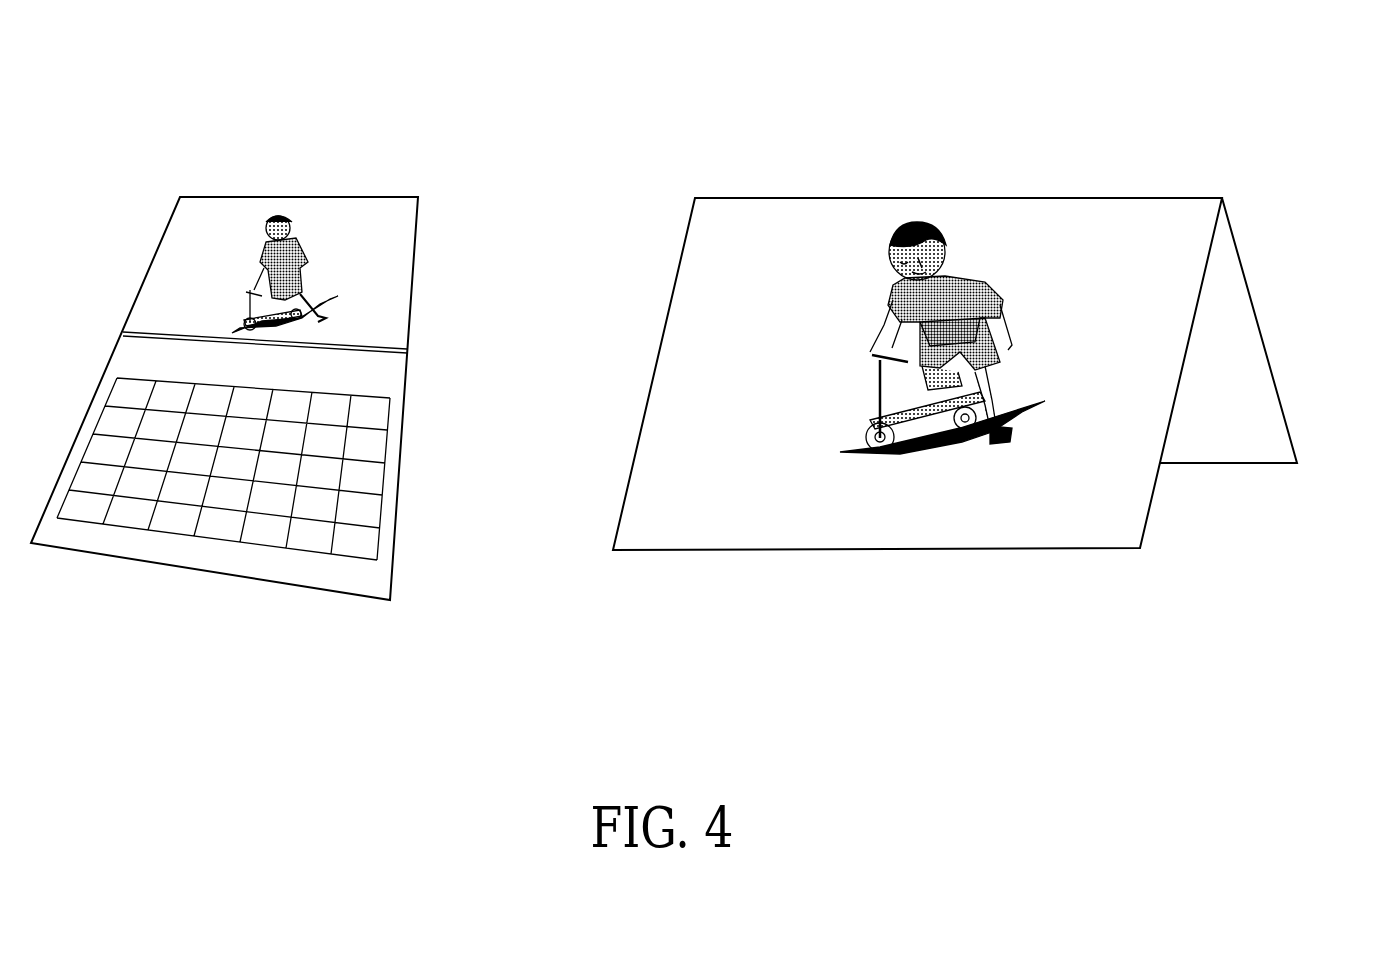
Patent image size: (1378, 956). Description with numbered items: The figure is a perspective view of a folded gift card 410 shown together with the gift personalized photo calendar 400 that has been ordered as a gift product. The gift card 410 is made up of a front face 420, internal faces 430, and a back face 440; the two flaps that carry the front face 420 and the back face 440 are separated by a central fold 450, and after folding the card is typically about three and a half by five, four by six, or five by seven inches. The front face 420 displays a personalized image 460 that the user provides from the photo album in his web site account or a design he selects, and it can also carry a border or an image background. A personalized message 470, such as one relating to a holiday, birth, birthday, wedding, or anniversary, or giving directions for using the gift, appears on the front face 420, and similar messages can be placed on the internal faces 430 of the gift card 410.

The gift personalized photo calendar 400 is at (412, 158).
The gift card 410 is at (679, 341).
The front face 420 is at (666, 400).
The internal faces 430 is at (1122, 455).
The back face 440 is at (1212, 355).
The central fold 450 is at (738, 198).
The personalized image 460 is at (980, 275).
The personalized message 470 is at (1040, 522).